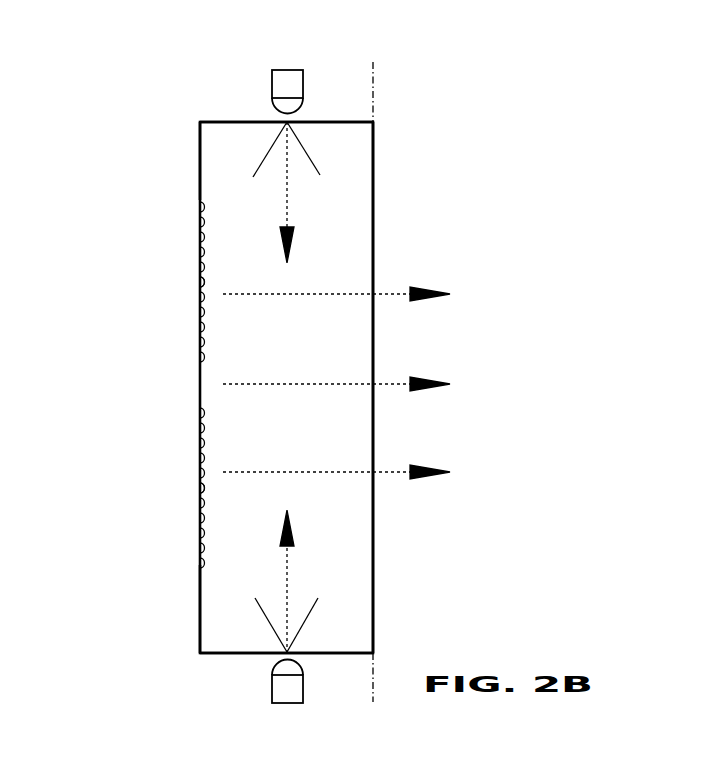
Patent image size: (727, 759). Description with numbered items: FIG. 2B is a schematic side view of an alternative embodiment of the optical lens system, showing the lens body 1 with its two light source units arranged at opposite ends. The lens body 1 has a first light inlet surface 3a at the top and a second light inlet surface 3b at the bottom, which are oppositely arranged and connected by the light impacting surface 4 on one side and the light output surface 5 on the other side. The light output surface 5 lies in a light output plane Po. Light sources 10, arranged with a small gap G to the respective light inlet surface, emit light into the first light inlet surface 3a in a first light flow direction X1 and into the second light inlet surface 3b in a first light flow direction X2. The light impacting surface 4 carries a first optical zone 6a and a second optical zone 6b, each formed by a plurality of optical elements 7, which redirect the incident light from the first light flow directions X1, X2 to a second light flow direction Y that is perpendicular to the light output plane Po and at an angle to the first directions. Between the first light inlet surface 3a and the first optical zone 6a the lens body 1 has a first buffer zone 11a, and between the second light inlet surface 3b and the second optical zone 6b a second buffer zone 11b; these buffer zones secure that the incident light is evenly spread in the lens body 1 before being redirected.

The lens body 1 is at (310, 350).
The first light inlet surface 3a is at (330, 122).
The second light inlet surface 3b is at (348, 654).
The light impacting surface 4 is at (185, 377).
The light output surface 5 is at (385, 224).
The first optical zone 6a is at (165, 227).
The second optical zone 6b is at (165, 432).
The optical elements 7 is at (200, 282).
The light sources 10 is at (285, 88).
The first buffer zone 11a is at (185, 152).
The second buffer zone 11b is at (185, 599).
The gap G is at (250, 106).
The light output plane Po is at (373, 82).
The first light flow direction X1 is at (287, 203).
The first light flow direction X2 is at (287, 570).
The second light flow direction Y is at (336, 371).